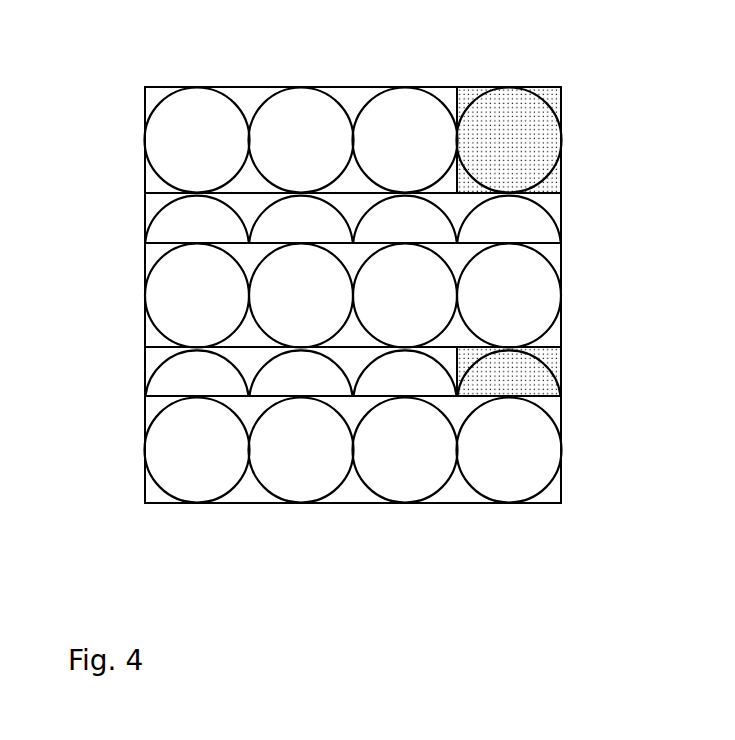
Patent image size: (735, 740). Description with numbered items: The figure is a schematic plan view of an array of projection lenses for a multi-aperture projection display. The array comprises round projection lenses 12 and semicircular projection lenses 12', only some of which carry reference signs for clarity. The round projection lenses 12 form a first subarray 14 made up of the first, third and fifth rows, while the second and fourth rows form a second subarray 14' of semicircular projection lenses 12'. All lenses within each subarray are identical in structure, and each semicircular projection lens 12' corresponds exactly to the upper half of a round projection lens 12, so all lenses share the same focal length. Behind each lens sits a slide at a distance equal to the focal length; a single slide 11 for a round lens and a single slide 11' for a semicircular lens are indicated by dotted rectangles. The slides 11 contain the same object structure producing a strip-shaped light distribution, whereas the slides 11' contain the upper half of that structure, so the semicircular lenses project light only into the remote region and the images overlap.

The slide 11 is at (554, 135).
The slide 11' is at (555, 358).
The round projection lens 12 is at (353, 294).
The semicircular projection lens 12' is at (298, 288).
The first subarray 14 is at (420, 300).
The second subarray 14' is at (423, 294).